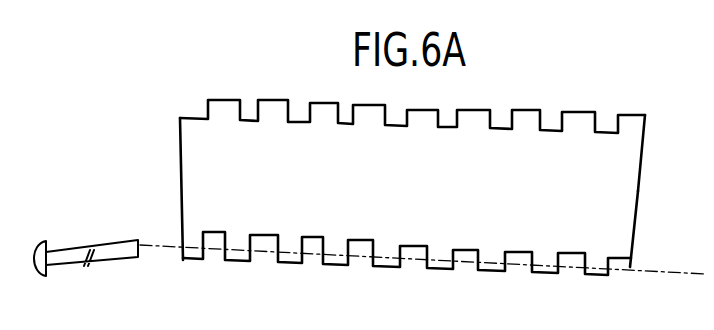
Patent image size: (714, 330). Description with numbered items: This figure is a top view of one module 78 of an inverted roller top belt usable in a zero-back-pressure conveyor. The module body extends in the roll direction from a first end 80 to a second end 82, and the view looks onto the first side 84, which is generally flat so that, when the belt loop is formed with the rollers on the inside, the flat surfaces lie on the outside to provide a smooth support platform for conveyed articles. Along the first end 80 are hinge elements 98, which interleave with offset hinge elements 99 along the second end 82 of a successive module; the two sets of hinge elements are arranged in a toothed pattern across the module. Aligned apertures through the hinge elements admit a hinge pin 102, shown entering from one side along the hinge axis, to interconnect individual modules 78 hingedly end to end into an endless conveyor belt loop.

The module 78 is at (405, 191).
The first end 80 is at (532, 105).
The second end 82 is at (493, 268).
The first side 84 is at (190, 172).
The hinge elements 98 is at (630, 123).
The offset hinge elements 99 is at (608, 268).
The hinge pin 102 is at (98, 258).